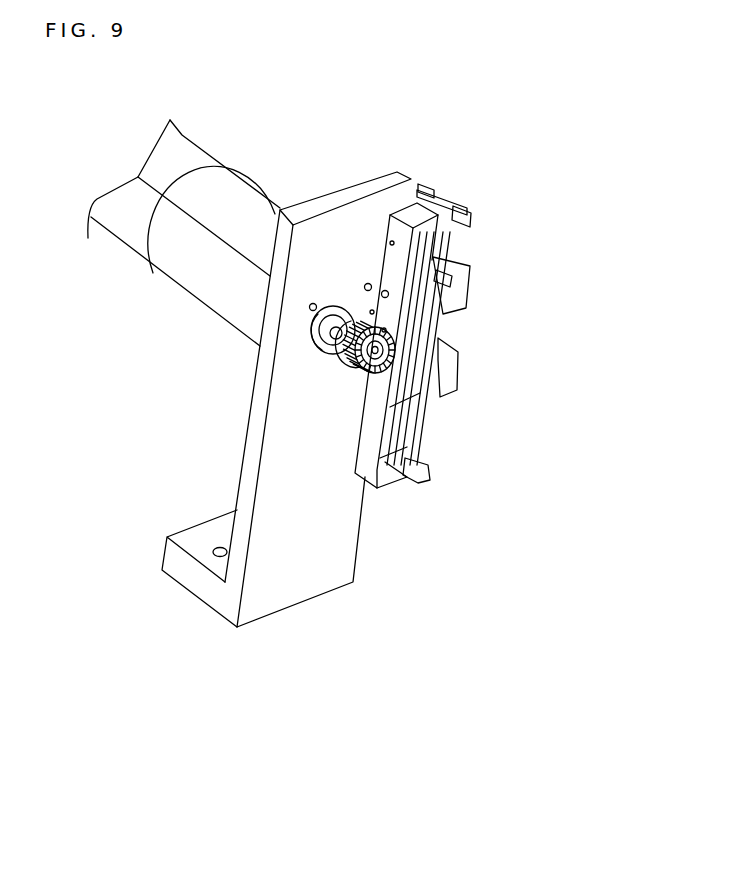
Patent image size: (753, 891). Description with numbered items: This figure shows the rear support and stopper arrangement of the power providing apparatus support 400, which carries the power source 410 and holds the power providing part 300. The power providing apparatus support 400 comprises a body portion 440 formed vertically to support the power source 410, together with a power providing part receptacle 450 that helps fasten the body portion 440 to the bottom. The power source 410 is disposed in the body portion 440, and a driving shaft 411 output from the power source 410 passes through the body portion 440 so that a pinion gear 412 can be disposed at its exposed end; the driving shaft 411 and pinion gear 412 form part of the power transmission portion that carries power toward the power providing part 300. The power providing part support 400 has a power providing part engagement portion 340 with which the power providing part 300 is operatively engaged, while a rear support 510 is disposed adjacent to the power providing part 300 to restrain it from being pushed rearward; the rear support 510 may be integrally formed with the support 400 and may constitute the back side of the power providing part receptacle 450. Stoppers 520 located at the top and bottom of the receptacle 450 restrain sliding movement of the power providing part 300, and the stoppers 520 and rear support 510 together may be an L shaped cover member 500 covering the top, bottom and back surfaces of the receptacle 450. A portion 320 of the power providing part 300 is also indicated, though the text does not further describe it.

The power providing part 300 is at (491, 345).
The slider block 320 is at (473, 280).
The power providing part engagement portion 340 is at (433, 250).
The power providing apparatus support 400 is at (99, 97).
The power source 410 is at (195, 257).
The driving shaft 411 is at (335, 325).
The pinion gear 412 is at (348, 361).
The body portion 440 is at (352, 222).
The power providing part receptacle 450 is at (466, 457).
The L shaped cover member 500 is at (263, 702).
The rear support 510 is at (353, 453).
The stoppers 520 is at (395, 480).